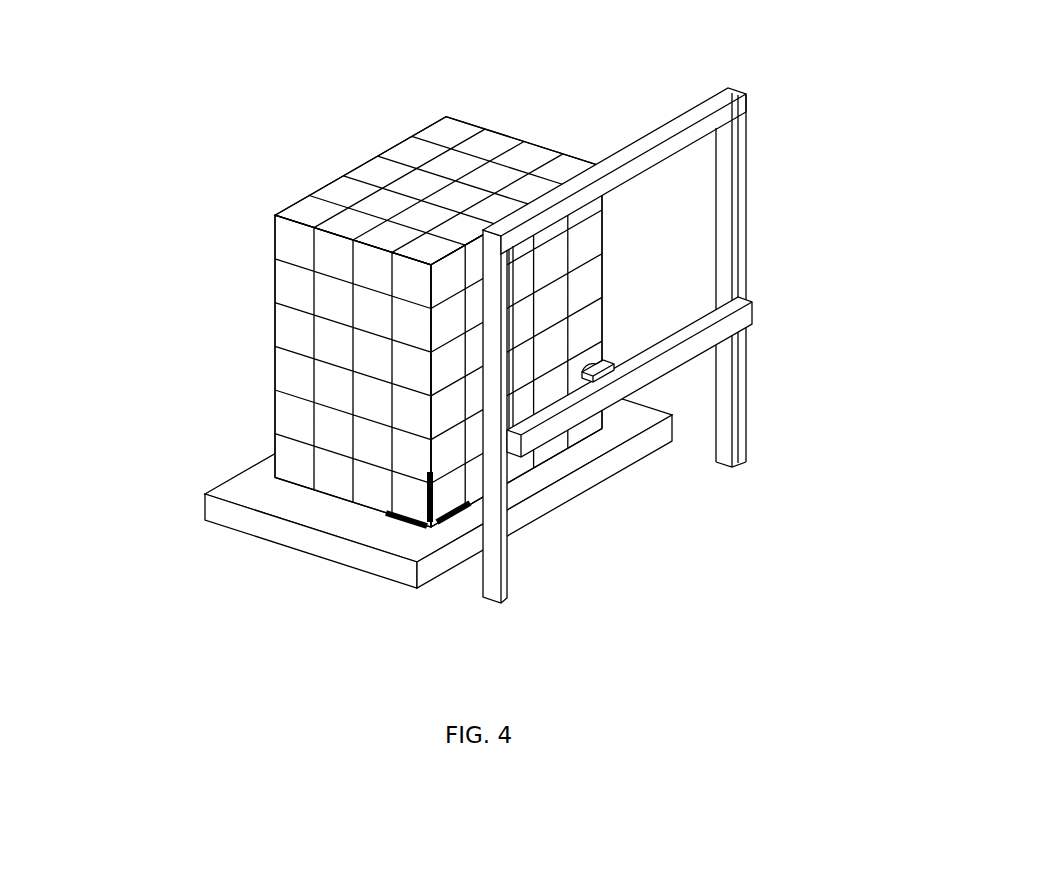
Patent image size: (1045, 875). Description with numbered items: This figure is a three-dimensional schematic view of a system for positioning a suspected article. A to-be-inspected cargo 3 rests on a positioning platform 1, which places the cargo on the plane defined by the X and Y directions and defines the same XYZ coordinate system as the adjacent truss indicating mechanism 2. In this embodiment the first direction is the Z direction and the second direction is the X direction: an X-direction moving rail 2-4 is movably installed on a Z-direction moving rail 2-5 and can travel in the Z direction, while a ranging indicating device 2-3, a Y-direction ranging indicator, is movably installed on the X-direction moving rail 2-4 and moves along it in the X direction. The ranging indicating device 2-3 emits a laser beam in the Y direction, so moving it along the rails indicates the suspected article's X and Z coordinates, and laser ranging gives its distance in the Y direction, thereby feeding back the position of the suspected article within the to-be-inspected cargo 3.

The positioning platform 1 is at (248, 498).
The truss indicating mechanism 2 is at (673, 135).
The ranging indicating device 2-3 is at (590, 372).
The X-direction moving rail 2-4 is at (675, 362).
The Z-direction moving rail 2-5 is at (743, 245).
The to-be-inspected cargo 3 is at (288, 283).